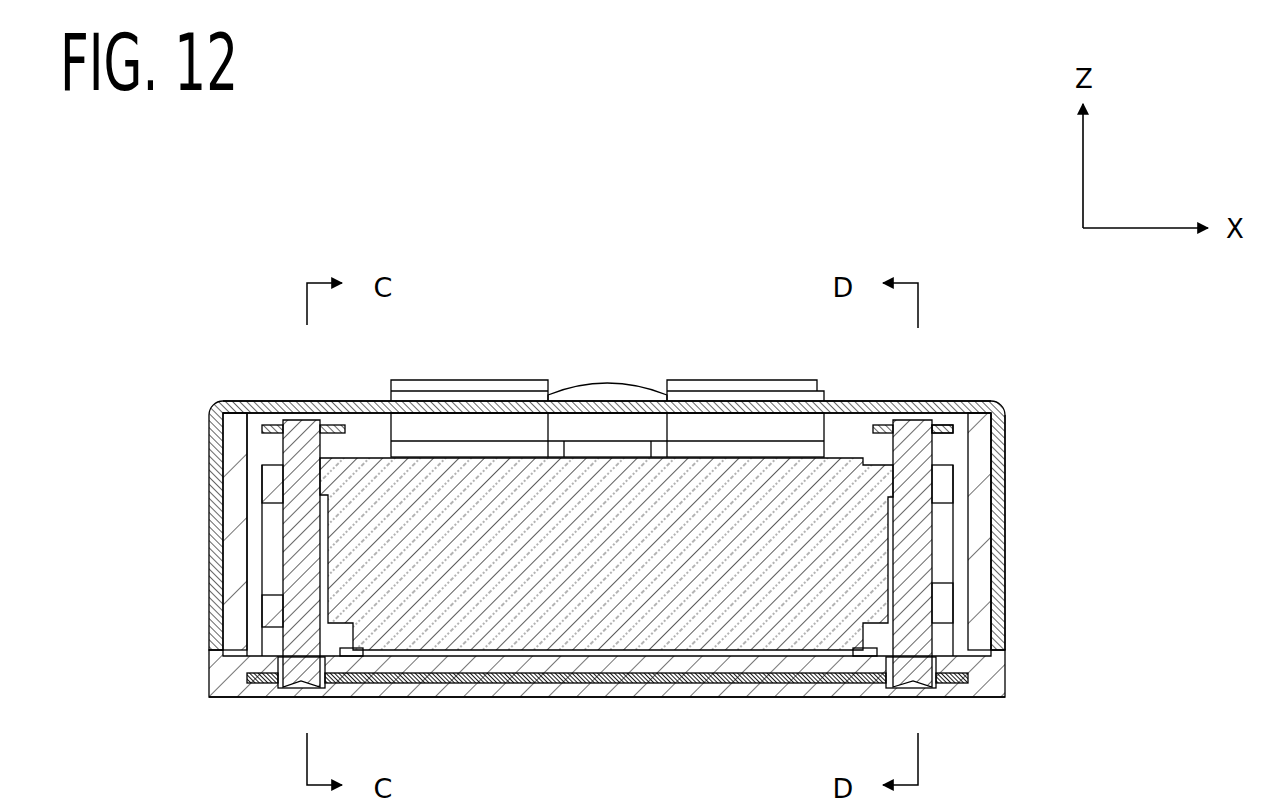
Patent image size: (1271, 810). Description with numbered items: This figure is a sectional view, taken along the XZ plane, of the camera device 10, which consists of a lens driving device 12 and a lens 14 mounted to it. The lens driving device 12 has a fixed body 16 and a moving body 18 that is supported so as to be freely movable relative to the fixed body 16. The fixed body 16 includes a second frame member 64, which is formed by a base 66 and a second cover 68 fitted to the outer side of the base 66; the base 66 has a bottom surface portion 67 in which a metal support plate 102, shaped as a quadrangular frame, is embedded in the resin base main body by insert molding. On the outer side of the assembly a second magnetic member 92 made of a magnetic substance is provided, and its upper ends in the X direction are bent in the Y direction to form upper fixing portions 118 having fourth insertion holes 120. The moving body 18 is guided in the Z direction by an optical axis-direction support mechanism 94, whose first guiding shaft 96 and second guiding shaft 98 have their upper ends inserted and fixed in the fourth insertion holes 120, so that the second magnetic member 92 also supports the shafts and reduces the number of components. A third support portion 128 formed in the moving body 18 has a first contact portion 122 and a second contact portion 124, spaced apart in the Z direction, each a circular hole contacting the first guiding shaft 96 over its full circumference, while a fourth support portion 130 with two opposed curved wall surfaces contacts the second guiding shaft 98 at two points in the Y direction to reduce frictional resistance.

The camera device 10 is at (974, 298).
The lens driving device 12 is at (1006, 406).
The lens 14 is at (694, 440).
The fixed body 16 is at (1010, 594).
The moving body 18 is at (493, 492).
The second frame member 64 is at (1013, 427).
The base 66 is at (619, 700).
The bottom surface portion 67 is at (444, 697).
The second cover 68 is at (702, 428).
The second magnetic member 92 is at (940, 428).
The optical axis-direction support mechanism 94 is at (940, 559).
The first guiding shaft 96 is at (300, 558).
The second guiding shaft 98 is at (936, 605).
The support plate 102 is at (556, 681).
The upper fixing portion 118 is at (332, 428).
The fourth insertion hole 120 is at (292, 436).
The first contact portion 122 is at (290, 496).
The second contact portion 124 is at (290, 626).
The third support portion 128 is at (268, 478).
The fourth support portion 130 is at (952, 480).